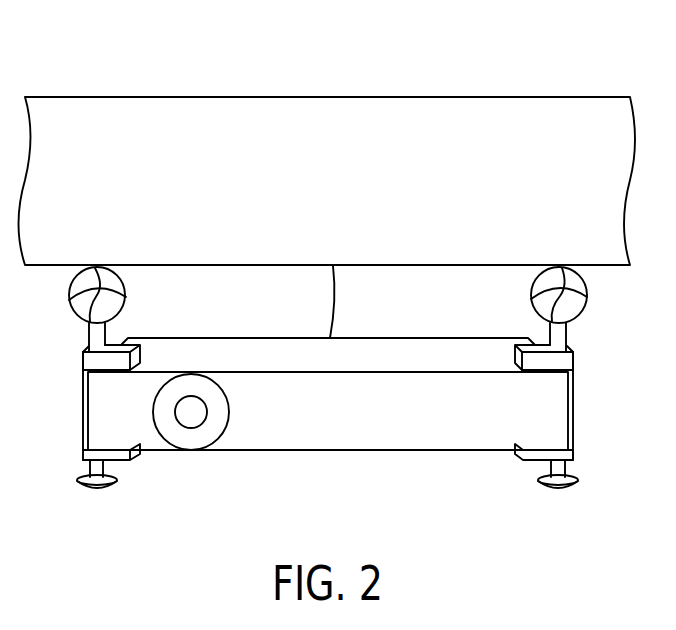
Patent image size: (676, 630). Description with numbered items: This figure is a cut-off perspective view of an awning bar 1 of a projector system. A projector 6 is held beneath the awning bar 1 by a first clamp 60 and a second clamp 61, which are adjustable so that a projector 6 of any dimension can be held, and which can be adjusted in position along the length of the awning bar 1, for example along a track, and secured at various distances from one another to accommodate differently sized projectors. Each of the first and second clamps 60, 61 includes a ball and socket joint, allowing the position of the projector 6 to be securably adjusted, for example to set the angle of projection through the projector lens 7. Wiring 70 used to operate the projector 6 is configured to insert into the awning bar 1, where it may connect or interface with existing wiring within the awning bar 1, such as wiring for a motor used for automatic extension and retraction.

The awning bar 1 is at (410, 105).
The projector 6 is at (462, 438).
The projector lens 7 is at (190, 438).
The first clamp 60 is at (90, 362).
The second clamp 61 is at (558, 335).
The wiring 70 is at (334, 297).